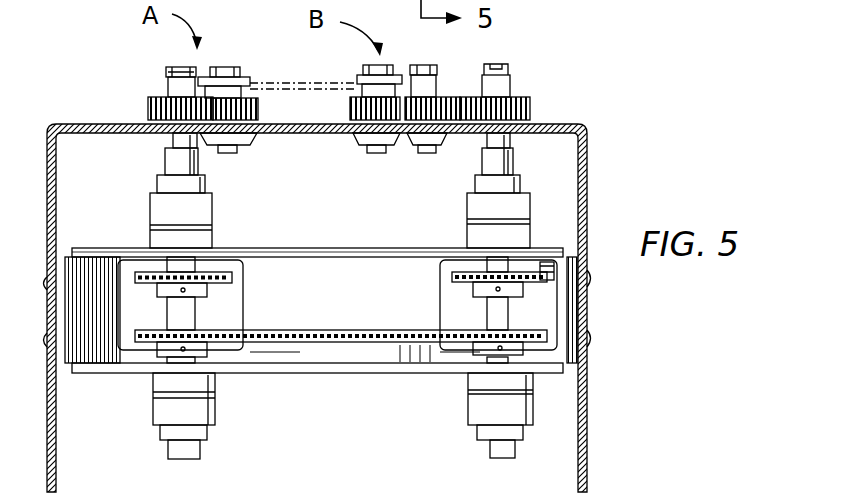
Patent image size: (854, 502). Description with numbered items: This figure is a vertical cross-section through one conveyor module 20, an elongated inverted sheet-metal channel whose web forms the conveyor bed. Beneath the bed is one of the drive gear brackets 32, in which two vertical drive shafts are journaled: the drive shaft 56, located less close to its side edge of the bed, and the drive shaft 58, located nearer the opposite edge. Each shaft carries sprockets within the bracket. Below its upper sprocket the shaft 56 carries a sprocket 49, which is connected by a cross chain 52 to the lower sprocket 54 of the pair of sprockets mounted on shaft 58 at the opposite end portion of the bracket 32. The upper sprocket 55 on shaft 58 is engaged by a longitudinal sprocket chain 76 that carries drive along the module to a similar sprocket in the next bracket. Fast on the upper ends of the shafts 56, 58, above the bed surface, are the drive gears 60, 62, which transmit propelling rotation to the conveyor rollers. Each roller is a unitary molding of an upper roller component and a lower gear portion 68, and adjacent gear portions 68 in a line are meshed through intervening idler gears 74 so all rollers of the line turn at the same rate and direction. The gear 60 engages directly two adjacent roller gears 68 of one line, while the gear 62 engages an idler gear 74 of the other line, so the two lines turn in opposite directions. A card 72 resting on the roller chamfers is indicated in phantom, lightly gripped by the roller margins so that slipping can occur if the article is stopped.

The module 20 is at (590, 413).
The drive gear bracket 32 is at (318, 248).
The sprocket 49 is at (148, 345).
The cross chain 52 is at (388, 330).
The sprocket 54 is at (560, 318).
The upper sprocket 55 is at (540, 272).
The drive shaft 56 is at (172, 137).
The drive shaft 58 is at (485, 137).
The drive gear 60 is at (148, 108).
The drive gear 62 is at (533, 100).
The gear portion 68 is at (258, 108).
The card 72 is at (318, 74).
The idler gear 74 is at (447, 95).
The longitudinal sprocket chain 76 is at (548, 270).